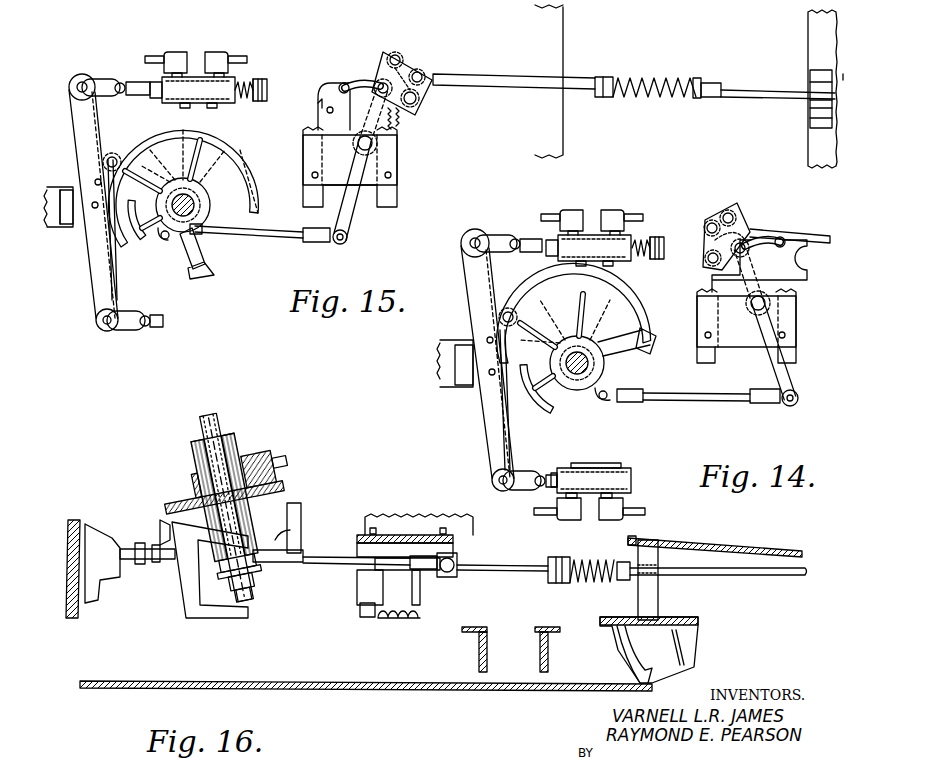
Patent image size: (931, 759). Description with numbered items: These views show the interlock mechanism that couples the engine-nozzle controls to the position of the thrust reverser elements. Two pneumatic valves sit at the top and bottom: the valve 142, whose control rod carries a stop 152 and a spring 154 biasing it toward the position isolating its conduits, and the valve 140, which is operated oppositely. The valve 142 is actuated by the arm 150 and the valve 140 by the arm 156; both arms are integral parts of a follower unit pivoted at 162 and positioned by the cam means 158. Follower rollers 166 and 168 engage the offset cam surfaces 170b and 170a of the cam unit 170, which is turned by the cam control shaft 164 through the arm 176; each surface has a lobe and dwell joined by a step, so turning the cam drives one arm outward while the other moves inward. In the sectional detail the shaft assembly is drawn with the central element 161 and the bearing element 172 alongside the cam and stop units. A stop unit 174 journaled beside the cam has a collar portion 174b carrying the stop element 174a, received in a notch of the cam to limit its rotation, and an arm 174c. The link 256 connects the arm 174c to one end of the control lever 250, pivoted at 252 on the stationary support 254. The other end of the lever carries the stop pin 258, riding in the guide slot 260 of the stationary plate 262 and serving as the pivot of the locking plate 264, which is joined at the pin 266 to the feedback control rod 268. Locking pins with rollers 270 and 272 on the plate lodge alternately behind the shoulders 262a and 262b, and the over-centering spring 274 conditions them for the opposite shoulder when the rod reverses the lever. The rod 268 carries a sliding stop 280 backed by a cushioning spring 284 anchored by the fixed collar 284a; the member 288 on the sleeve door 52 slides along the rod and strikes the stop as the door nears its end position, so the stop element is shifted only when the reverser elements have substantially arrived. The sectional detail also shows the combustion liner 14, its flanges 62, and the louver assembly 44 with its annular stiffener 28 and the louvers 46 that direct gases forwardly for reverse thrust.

In FIG. 16, the combustion liner 14 is at (385, 688).
In FIG. 16, the annular stiffener 28 is at (624, 656).
In FIG. 16, the louver assembly 44 is at (706, 630).
In FIG. 16, the louver 46 is at (685, 647).
In FIG. 16, the sleeve door 52 is at (725, 540).
In FIG. 16, the flange 62 is at (535, 628).
In FIG. 14, the valve 140 is at (620, 477).
In FIG. 15, the valve 142 is at (194, 75).
In FIG. 14, the valve 142 is at (590, 232).
In FIG. 15, the actuating arm 150 is at (82, 140).
In FIG. 14, the actuating arm 150 is at (473, 277).
In FIG. 15, the stop 152 is at (261, 82).
In FIG. 14, the stop 152 is at (660, 234).
In FIG. 15, the spring 154 is at (252, 98).
In FIG. 14, the spring 154 is at (645, 259).
In FIG. 15, the arm 156 is at (93, 283).
In FIG. 14, the arm 156 is at (487, 440).
In FIG. 15, the cam means 158 is at (165, 283).
In FIG. 14, the cam means 158 is at (603, 437).
In FIG. 15, the shaft 161 is at (185, 192).
In FIG. 14, the shaft 161 is at (566, 370).
In FIG. 16, the shaft 161 is at (218, 420).
In FIG. 15, the pivot 162 is at (78, 185).
In FIG. 14, the pivot 162 is at (468, 344).
In FIG. 16, the pivot 162 is at (125, 537).
In FIG. 16, the cam control shaft 164 is at (236, 448).
In FIG. 15, the follower roller 166 is at (97, 262).
In FIG. 14, the follower roller 166 is at (485, 412).
In FIG. 16, the follower roller 166 is at (132, 537).
In FIG. 15, the follower roller 168 is at (112, 155).
In FIG. 14, the follower roller 168 is at (510, 311).
In FIG. 16, the follower roller 168 is at (152, 563).
In FIG. 15, the cam unit 170 is at (183, 188).
In FIG. 14, the cam unit 170 is at (613, 330).
In FIG. 16, the cam unit 170 is at (178, 528).
In FIG. 15, the cam surface 170a is at (237, 163).
In FIG. 14, the cam surface 170a is at (617, 298).
In FIG. 16, the cam surface 170a is at (202, 570).
In FIG. 15, the cam surface 170b is at (180, 135).
In FIG. 14, the cam surface 170b is at (533, 418).
In FIG. 16, the cam surface 170b is at (148, 540).
In FIG. 16, the bearing housing 172 is at (258, 478).
In FIG. 16, the stop unit 174 is at (267, 577).
In FIG. 15, the stop element 174a is at (208, 265).
In FIG. 14, the stop element 174a is at (648, 335).
In FIG. 16, the stop element 174a is at (294, 505).
In FIG. 16, the collar portion 174b is at (225, 582).
In FIG. 15, the arm 174c is at (158, 237).
In FIG. 14, the arm 174c is at (610, 400).
In FIG. 16, the arm 174c is at (300, 520).
In FIG. 15, the arm 176 is at (186, 133).
In FIG. 14, the arm 176 is at (578, 295).
In FIG. 16, the arm 176 is at (200, 617).
In FIG. 15, the control lever 250 is at (352, 217).
In FIG. 14, the control lever 250 is at (785, 368).
In FIG. 16, the control lever 250 is at (437, 573).
In FIG. 15, the pivot 252 is at (373, 143).
In FIG. 14, the pivot 252 is at (766, 304).
In FIG. 16, the pivot 252 is at (420, 597).
In FIG. 15, the stationary support 254 is at (393, 162).
In FIG. 14, the stationary support 254 is at (785, 329).
In FIG. 16, the stationary support 254 is at (440, 548).
In FIG. 15, the link 256 is at (267, 230).
In FIG. 14, the link 256 is at (688, 404).
In FIG. 16, the link 256 is at (330, 553).
In FIG. 15, the stop pin 258 is at (380, 70).
In FIG. 14, the stop pin 258 is at (744, 242).
In FIG. 15, the guide slot 260 is at (345, 85).
In FIG. 14, the guide slot 260 is at (782, 240).
In FIG. 15, the stationary plate 262 is at (311, 113).
In FIG. 14, the stationary plate 262 is at (807, 279).
In FIG. 16, the stationary plate 262 is at (459, 544).
In FIG. 14, the shoulder 262a is at (800, 255).
In FIG. 15, the shoulder 262b is at (322, 102).
In FIG. 15, the locking plate 264 is at (413, 75).
In FIG. 14, the locking plate 264 is at (710, 214).
In FIG. 15, the pivot pin 266 is at (422, 77).
In FIG. 14, the pivot pin 266 is at (707, 226).
In FIG. 16, the pivot pin 266 is at (363, 597).
In FIG. 15, the feedback control rod 268 is at (514, 81).
In FIG. 14, the feedback control rod 268 is at (818, 236).
In FIG. 16, the feedback control rod 268 is at (523, 571).
In FIG. 15, the locking pin 270 is at (418, 98).
In FIG. 14, the locking pin 270 is at (732, 212).
In FIG. 15, the locking pin 272 is at (396, 55).
In FIG. 14, the locking pin 272 is at (707, 260).
In FIG. 15, the spring 274 is at (413, 117).
In FIG. 16, the spring 274 is at (397, 616).
In FIG. 15, the stop 280 is at (710, 98).
In FIG. 16, the stop 280 is at (712, 571).
In FIG. 15, the cushioning spring 284 is at (655, 98).
In FIG. 16, the cushioning spring 284 is at (590, 581).
In FIG. 15, the fixed collar 284a is at (608, 73).
In FIG. 16, the fixed collar 284a is at (553, 555).
In FIG. 15, the member 288 is at (808, 120).
In FIG. 16, the member 288 is at (658, 588).